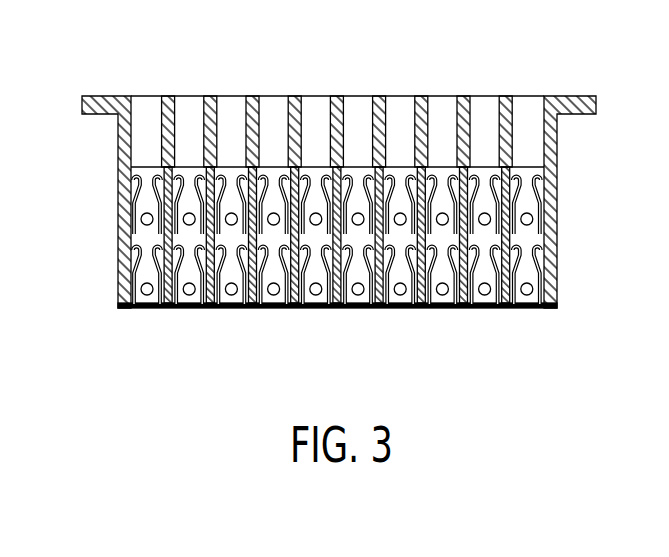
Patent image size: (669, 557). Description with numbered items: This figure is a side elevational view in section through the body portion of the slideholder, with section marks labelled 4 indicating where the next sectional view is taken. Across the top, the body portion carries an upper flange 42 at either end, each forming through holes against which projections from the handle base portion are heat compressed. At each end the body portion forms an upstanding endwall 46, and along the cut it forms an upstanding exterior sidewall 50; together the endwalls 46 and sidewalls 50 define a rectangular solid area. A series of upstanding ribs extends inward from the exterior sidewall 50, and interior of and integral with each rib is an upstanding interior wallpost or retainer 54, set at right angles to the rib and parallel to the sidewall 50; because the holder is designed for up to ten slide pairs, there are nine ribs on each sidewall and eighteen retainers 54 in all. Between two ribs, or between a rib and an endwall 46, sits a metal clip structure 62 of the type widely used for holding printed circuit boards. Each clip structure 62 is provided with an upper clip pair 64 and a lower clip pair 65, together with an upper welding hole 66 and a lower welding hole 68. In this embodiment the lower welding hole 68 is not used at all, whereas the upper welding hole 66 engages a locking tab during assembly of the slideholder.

The upper flange 42 is at (100, 97).
The interior wallpost or retainer 54 is at (169, 96).
The exterior sidewall 50 is at (231, 166).
The upper clip pair 64 is at (277, 167).
The endwall 46 is at (120, 190).
The upper welding hole 66 is at (140, 220).
The lower clip pair 65 is at (137, 248).
The lower welding hole 68 is at (140, 290).
The clip structure 62 is at (188, 307).
The section line 4- 4 is at (160, 24).